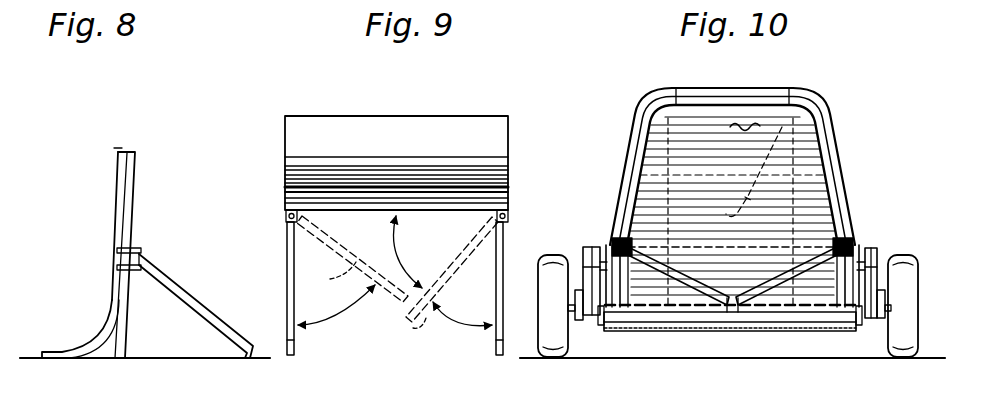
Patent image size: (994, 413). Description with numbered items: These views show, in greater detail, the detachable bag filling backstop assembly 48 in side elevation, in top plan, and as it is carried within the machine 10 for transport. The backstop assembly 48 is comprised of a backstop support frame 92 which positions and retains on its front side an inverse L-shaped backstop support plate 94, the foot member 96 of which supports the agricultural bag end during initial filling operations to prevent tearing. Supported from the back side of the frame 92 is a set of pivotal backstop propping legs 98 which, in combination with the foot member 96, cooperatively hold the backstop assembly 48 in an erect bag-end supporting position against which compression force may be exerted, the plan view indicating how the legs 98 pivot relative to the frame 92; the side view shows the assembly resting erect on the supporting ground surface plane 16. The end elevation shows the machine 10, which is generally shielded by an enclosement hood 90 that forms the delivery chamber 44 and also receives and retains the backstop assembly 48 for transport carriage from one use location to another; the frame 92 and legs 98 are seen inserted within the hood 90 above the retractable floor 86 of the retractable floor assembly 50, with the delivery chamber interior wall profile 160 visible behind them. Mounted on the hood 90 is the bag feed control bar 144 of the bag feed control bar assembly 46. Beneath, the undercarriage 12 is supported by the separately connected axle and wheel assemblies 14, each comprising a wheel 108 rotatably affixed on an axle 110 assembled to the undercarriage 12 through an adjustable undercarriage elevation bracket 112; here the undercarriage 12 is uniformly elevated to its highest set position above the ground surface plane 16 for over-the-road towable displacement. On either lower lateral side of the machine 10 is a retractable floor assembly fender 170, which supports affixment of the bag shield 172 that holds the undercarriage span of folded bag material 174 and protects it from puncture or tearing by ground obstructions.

In FIG. 10, the machine 10 is at (848, 135).
In FIG. 10, the undercarriage 12 is at (601, 245).
In FIG. 10, the axle and wheel assemblies 14 is at (573, 197).
In FIG. 8, the supporting ground surface plane 16 is at (192, 350).
In FIG. 10, the supporting ground surface plane 16 is at (840, 356).
In FIG. 10, the delivery chamber 44 is at (812, 95).
In FIG. 10, the bag feed control bar assembly 46 is at (845, 172).
In FIG. 8, the detachable bag filling backstop assembly 48 is at (128, 118).
In FIG. 9, the detachable bag filling backstop assembly 48 is at (438, 103).
In FIG. 10, the detachable bag filling backstop assembly 48 is at (622, 118).
In FIG. 10, the retractable floor assembly 50 is at (690, 340).
In FIG. 10, the retractable floor 86 is at (747, 316).
In FIG. 10, the enclosement hood 90 is at (722, 108).
In FIG. 8, the backstop support frame 92 is at (135, 205).
In FIG. 9, the backstop support frame 92 is at (428, 212).
In FIG. 10, the backstop support frame 92 is at (732, 272).
In FIG. 8, the inverse L-shaped backstop support plate 94 is at (110, 268).
In FIG. 9, the inverse L-shaped backstop support plate 94 is at (285, 148).
In FIG. 10, the inverse L-shaped backstop support plate 94 is at (748, 130).
In FIG. 8, the foot member 96 is at (80, 347).
In FIG. 9, the foot member 96 is at (385, 117).
In FIG. 8, the pivotal backstop propping legs 98 is at (177, 280).
In FIG. 9, the pivotal backstop propping legs 98 is at (288, 270).
In FIG. 10, the pivotal backstop propping legs 98 is at (689, 281).
In FIG. 10, the wheels 108 is at (540, 308).
In FIG. 10, the axles 110 is at (573, 306).
In FIG. 10, the undercarriage elevation brackets 112 is at (575, 288).
In FIG. 10, the bag feed control bar 144 is at (676, 88).
In FIG. 10, the delivery chamber interior wall profile 160 is at (660, 132).
In FIG. 10, the retractable floor assembly fender 170 is at (592, 320).
In FIG. 10, the bag shield 172 is at (753, 333).
In FIG. 10, the undercarriage span of folded bag material 174 is at (770, 328).